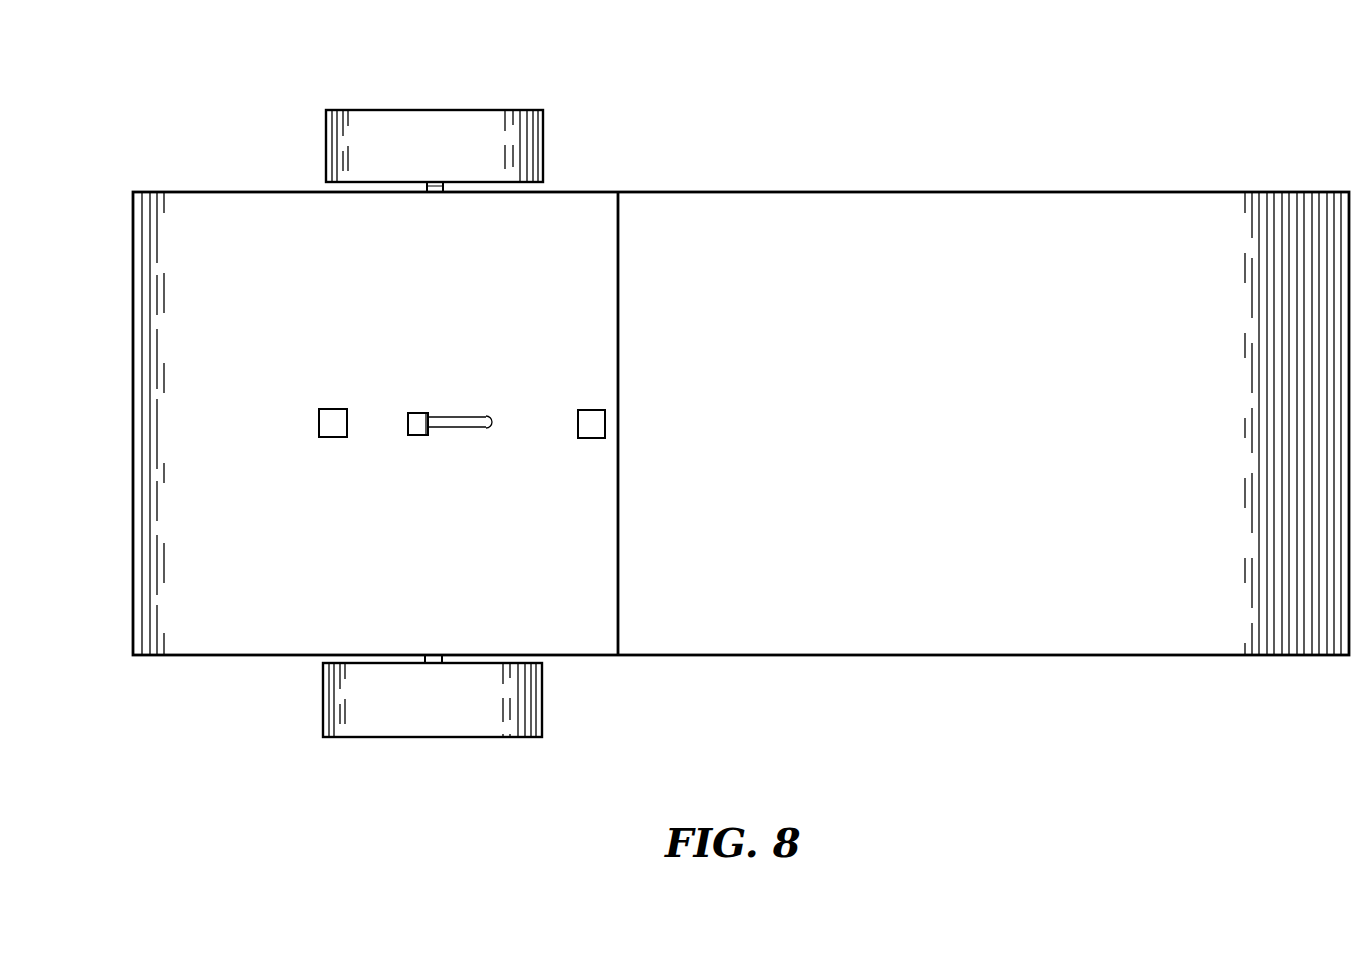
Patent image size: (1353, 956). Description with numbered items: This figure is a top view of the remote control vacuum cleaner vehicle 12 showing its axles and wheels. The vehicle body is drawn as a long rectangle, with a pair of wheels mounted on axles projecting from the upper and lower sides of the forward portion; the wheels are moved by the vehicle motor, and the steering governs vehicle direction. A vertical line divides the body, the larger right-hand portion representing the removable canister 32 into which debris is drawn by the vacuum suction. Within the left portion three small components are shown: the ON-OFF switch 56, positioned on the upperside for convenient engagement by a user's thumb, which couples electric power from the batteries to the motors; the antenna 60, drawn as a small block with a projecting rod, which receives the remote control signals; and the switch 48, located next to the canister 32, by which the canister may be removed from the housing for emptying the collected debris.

The remote control vacuum cleaner vehicle 12 is at (283, 590).
The removable canister 32 is at (912, 260).
The switch 48 is at (597, 417).
The ON-OFF switch 56 is at (328, 410).
The antenna 60 is at (455, 425).